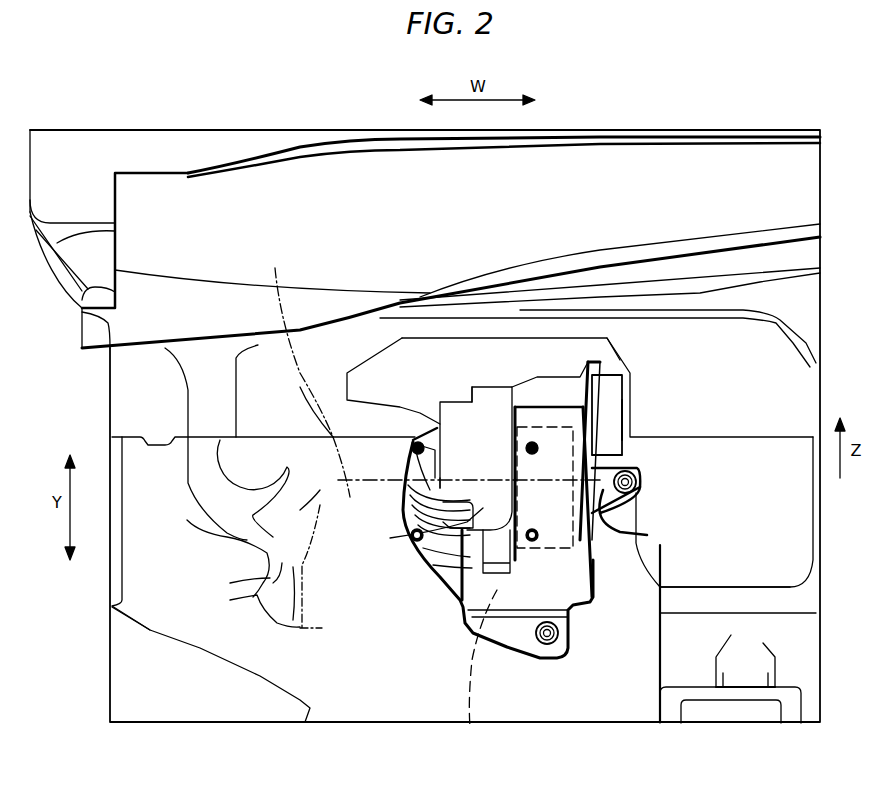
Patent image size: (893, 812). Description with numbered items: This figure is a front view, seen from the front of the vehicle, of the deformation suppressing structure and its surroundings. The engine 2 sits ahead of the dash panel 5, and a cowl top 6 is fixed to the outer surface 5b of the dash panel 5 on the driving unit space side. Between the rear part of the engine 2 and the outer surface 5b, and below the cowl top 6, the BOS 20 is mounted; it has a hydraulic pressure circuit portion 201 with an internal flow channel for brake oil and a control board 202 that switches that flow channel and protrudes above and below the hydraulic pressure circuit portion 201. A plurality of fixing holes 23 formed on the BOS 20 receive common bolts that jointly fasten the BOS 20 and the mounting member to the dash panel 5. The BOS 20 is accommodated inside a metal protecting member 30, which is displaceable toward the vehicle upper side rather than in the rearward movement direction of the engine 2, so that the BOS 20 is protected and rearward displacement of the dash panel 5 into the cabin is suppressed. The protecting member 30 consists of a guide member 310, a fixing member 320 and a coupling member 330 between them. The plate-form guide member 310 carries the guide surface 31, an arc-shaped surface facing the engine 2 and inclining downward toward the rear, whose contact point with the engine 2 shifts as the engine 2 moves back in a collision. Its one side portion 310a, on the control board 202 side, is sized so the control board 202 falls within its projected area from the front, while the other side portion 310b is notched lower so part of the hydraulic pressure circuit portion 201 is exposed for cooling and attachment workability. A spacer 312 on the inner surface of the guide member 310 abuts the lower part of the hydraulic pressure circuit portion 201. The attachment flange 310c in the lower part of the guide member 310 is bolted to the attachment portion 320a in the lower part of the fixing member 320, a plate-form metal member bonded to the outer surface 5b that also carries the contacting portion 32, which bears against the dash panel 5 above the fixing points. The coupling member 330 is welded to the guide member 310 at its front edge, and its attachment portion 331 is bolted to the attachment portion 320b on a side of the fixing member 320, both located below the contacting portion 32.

The engine 2 is at (310, 437).
The dash panel 5 is at (388, 725).
The outer surface 5b is at (283, 663).
The cowl top 6 is at (143, 205).
The BOS 20 is at (432, 400).
The hydraulic pressure circuit portion 201 is at (472, 387).
The control board 202 is at (528, 427).
The fixing holes 23 is at (530, 445).
The protecting member 30 is at (450, 603).
The guide surface 31 is at (640, 565).
The contacting portion 32 is at (612, 392).
The guide member 310 is at (568, 582).
The one side portion 310a is at (557, 408).
The other side portion 310b is at (452, 572).
The attachment flange 310c is at (520, 628).
The spacer 312 is at (471, 675).
The fixing member 320 is at (624, 421).
The attachment portion 320a is at (573, 643).
The attachment portion 320b is at (632, 495).
The coupling member 330 is at (605, 442).
The attachment portion 331 is at (605, 518).